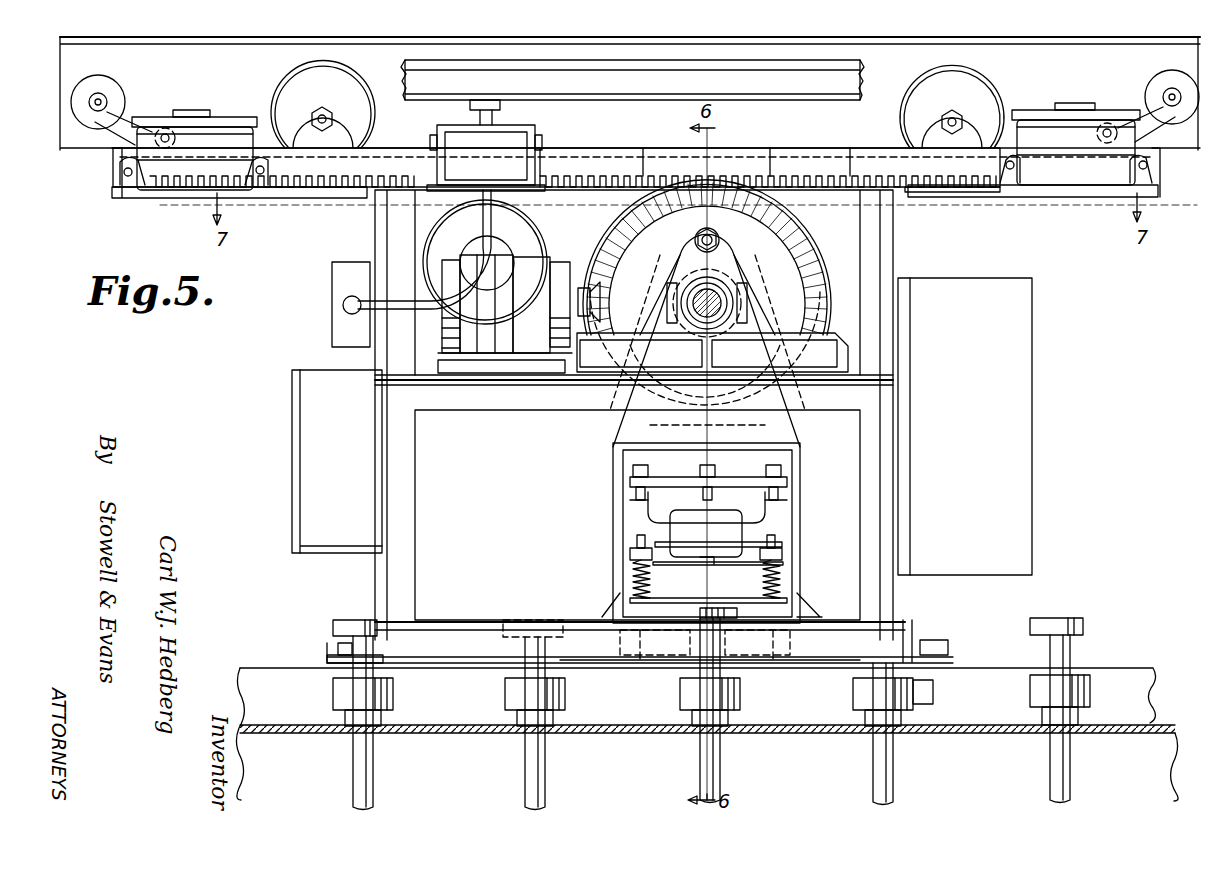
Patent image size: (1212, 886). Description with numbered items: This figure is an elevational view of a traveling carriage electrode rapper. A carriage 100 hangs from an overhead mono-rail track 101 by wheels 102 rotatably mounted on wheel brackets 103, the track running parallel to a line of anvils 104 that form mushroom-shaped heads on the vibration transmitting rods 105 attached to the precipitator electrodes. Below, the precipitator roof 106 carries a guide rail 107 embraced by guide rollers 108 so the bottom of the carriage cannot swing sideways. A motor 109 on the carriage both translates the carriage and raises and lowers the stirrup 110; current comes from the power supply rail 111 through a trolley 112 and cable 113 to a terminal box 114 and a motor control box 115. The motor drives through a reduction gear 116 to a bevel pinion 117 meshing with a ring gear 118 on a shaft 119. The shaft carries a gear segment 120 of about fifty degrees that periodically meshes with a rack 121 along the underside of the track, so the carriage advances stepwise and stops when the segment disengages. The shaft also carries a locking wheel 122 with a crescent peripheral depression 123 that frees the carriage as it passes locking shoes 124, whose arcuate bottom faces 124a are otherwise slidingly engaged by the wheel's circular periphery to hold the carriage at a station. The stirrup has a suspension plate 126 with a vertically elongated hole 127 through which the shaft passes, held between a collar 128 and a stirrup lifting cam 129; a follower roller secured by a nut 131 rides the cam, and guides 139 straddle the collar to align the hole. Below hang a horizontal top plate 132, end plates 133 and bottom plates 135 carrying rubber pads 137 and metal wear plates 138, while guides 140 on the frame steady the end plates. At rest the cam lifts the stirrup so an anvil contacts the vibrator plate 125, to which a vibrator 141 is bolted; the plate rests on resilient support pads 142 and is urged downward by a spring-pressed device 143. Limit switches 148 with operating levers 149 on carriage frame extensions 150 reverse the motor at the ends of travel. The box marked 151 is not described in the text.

The carriage 100 is at (880, 262).
The mono-rail track 101 is at (212, 69).
The wheels 102 is at (345, 92).
The wheel brackets 103 is at (978, 115).
The anvils 104 is at (345, 620).
The vibration transmitting rods 105 is at (333, 648).
The roof 106 is at (320, 735).
The guide rail 107 is at (1140, 678).
The guide rollers 108 is at (330, 690).
The motor 109 is at (528, 224).
The stirrup 110 is at (620, 470).
The power supply rail 111 is at (655, 91).
The trolley 112 is at (540, 135).
The cable 113 is at (343, 308).
The terminal box 114 is at (332, 289).
The motor control box 115 is at (298, 410).
The reduction gear 116 is at (540, 302).
The bevel pinion 117 is at (586, 286).
The ring gear 118 is at (630, 215).
The shaft 119 is at (774, 353).
The gear segment 120 is at (790, 426).
The rack 121 is at (306, 190).
The locking wheel 122 is at (805, 250).
The peripheral depression 123 is at (606, 410).
The locking shoes 124 is at (588, 163).
The arcuate bottom faces 124a is at (915, 194).
The vibrator plate 125 is at (632, 590).
The suspension plate 126 is at (665, 290).
The vertically elongated hole 127 is at (642, 353).
The collar 128 is at (712, 352).
The stirrup lifting cam 129 is at (678, 270).
The nut 131 is at (702, 290).
The horizontal top plate 132 is at (770, 458).
The end plates 133 is at (620, 502).
The bottom plates 135 is at (768, 650).
The rubber pads 137 is at (670, 648).
The wear plates 138 is at (640, 650).
The guides 139 is at (748, 299).
The guides 140 is at (806, 608).
The vibrator 141 is at (694, 538).
The resilient support pads 142 is at (620, 606).
The spring-pressed device 143 is at (782, 590).
The limit switches 148 is at (205, 133).
The operating levers 149 is at (100, 92).
The carriage frame extensions 150 is at (150, 198).
The control box 151 is at (1022, 385).